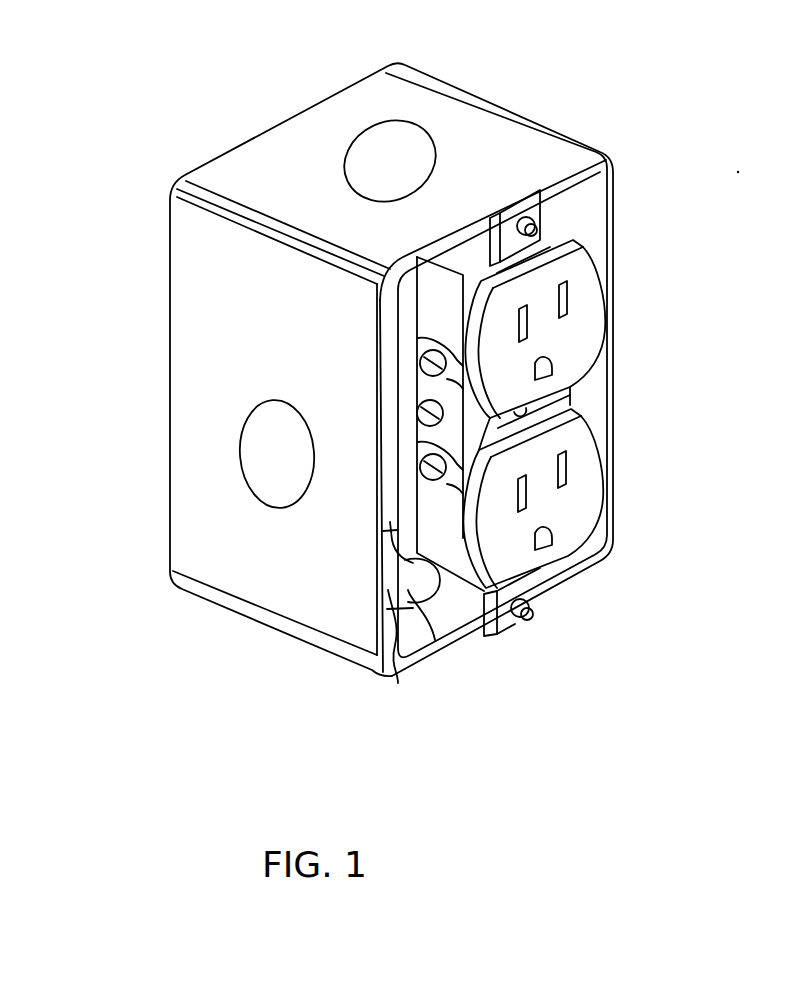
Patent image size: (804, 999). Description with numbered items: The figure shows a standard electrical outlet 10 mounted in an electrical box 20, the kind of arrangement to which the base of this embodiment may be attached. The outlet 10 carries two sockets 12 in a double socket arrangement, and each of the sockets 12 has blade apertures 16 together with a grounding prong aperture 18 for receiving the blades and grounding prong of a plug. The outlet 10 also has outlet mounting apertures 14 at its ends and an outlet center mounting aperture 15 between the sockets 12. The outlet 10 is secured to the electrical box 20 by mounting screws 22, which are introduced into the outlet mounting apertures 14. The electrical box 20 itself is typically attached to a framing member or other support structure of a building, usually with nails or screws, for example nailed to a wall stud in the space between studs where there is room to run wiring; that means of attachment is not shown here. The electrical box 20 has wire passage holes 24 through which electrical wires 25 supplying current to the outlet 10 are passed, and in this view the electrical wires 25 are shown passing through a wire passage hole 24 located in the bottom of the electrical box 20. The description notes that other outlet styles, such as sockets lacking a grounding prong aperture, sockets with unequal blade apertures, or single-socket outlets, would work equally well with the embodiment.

The electrical outlet 10 is at (437, 293).
The sockets 12 is at (588, 308).
The outlet mounting apertures 14 is at (530, 212).
The outlet center mounting aperture 15 is at (567, 393).
The blade apertures 16 is at (521, 498).
The grounding prong apertures 18 is at (585, 549).
The electrical box 20 is at (257, 287).
The mounting screws 22 is at (521, 622).
The wire passage holes 24 is at (398, 684).
The electrical wires 25 is at (435, 645).